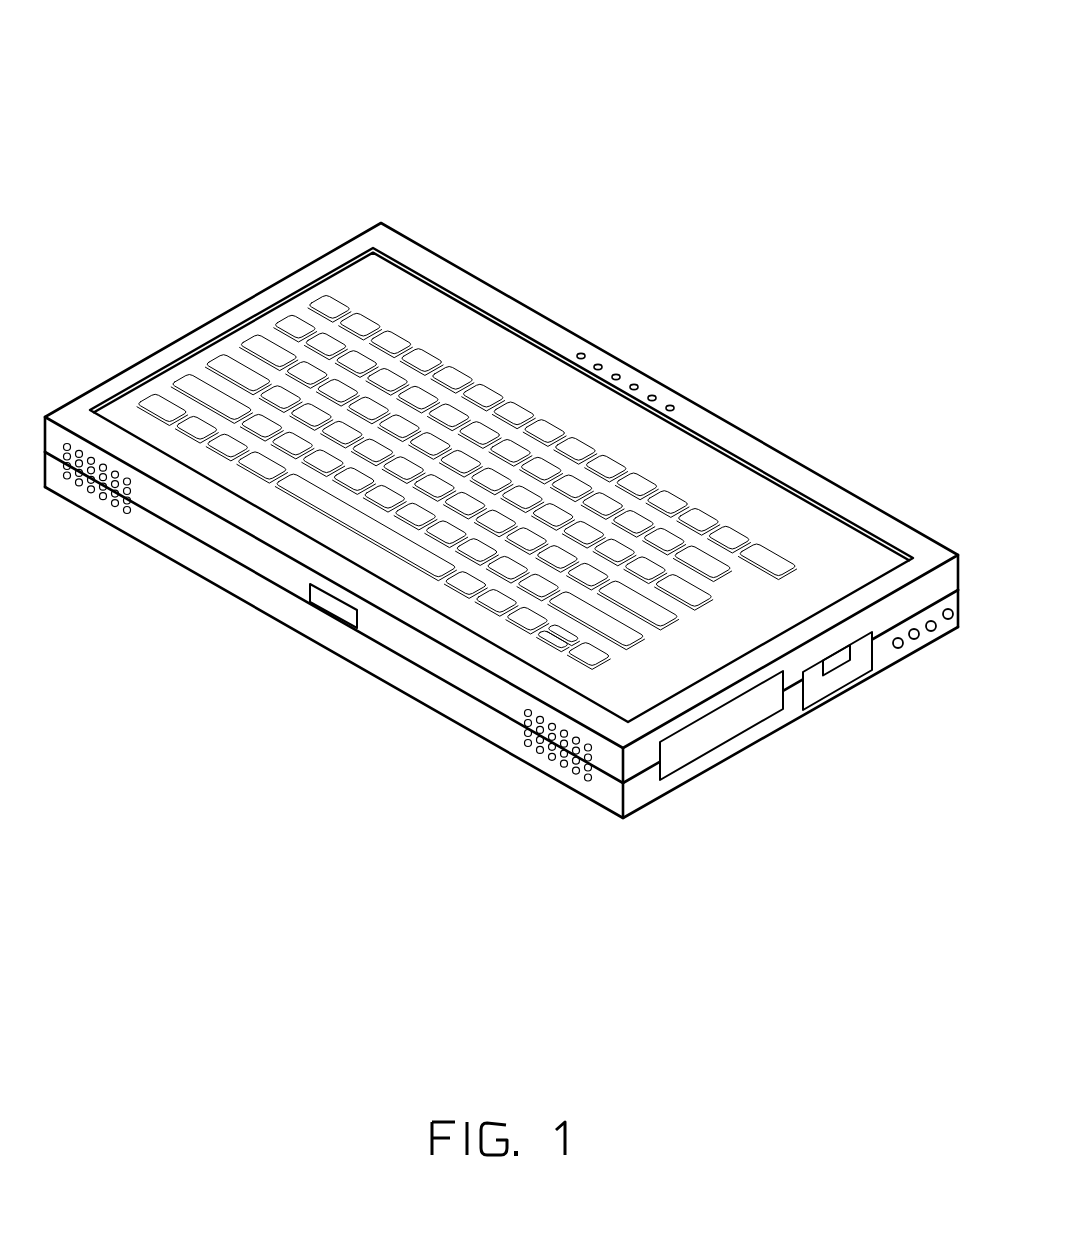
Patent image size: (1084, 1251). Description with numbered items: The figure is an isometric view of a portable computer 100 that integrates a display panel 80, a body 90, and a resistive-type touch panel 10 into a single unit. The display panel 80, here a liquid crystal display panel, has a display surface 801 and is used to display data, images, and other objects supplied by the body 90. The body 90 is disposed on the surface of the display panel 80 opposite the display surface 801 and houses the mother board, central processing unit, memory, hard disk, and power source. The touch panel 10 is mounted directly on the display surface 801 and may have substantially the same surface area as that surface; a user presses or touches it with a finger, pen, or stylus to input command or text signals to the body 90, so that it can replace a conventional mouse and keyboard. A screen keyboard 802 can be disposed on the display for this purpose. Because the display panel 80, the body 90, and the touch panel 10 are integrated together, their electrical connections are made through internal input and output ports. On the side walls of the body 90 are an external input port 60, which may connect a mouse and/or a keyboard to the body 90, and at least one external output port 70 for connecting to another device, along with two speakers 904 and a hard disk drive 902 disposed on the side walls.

The portable computer 100 is at (466, 64).
The touch panel 10 is at (355, 282).
The display panel 80 is at (182, 513).
The display surface 801 is at (175, 352).
The screen keyboard 802 is at (263, 343).
The body 90 is at (198, 557).
The hard disk drive 902 is at (707, 740).
The speakers 904 is at (553, 758).
The external input port 60 is at (898, 643).
The external output port 70 is at (948, 614).